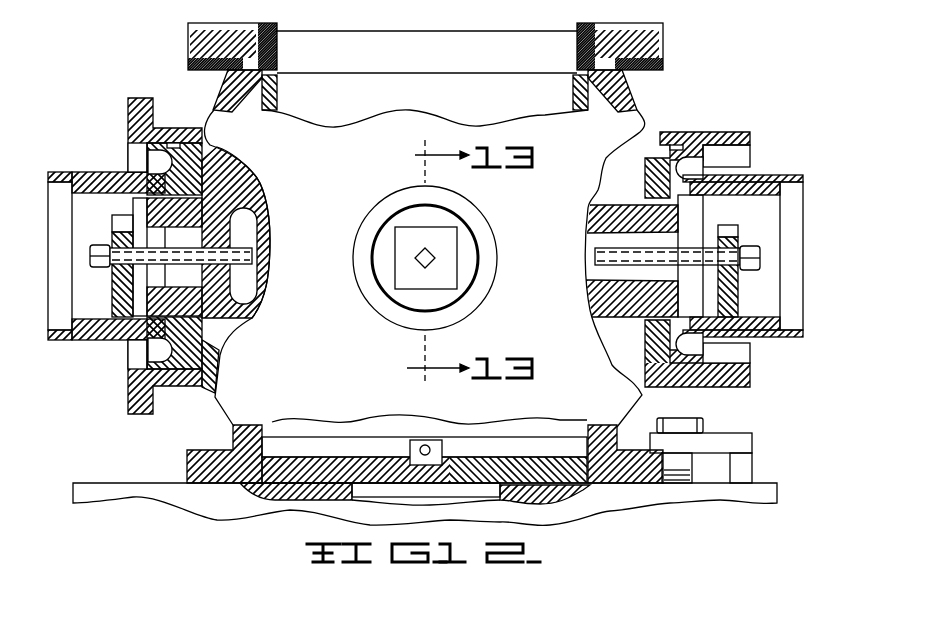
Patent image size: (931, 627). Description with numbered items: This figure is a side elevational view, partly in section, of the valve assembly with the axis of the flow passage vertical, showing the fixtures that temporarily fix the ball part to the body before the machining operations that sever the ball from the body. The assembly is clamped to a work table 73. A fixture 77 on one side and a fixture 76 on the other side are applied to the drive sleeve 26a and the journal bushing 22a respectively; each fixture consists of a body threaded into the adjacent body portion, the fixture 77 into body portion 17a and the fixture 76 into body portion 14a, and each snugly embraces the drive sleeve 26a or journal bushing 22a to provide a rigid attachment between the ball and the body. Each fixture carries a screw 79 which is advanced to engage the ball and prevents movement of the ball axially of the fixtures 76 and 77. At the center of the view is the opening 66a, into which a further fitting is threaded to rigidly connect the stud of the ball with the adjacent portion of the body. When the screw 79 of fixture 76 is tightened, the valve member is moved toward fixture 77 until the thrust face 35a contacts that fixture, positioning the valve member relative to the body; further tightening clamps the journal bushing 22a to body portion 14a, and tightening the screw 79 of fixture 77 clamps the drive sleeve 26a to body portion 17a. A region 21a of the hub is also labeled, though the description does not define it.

The body portion 14a is at (735, 388).
The body portion 17a is at (193, 383).
The hub 21a is at (600, 222).
The journal bushing 22a is at (606, 325).
The drive sleeve 26a is at (212, 185).
The thrust face 35a is at (200, 307).
The opening 66a is at (388, 222).
The work table 73 is at (718, 500).
The fixture 76 is at (764, 170).
The fixture 77 is at (86, 160).
The screw 79 is at (90, 245).